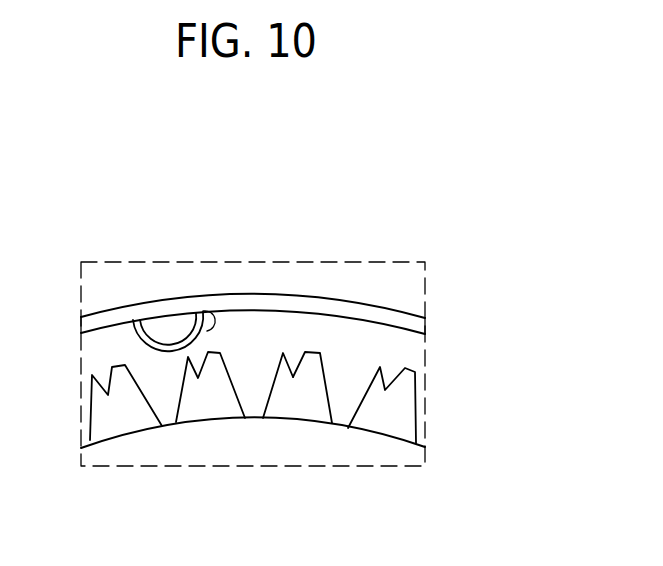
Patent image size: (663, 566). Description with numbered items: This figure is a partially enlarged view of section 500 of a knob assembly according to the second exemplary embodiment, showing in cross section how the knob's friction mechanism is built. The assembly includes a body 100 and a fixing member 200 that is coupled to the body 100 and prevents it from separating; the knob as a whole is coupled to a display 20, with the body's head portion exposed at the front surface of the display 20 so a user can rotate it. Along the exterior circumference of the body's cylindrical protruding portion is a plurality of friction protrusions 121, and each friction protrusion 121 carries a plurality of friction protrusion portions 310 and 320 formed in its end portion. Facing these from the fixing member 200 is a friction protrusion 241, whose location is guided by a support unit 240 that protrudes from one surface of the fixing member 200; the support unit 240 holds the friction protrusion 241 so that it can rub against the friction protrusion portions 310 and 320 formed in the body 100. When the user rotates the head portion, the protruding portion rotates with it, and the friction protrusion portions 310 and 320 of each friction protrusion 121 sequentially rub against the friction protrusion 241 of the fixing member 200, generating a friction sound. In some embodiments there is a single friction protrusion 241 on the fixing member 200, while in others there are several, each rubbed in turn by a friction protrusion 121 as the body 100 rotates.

The section 500 is at (367, 247).
The display 20 is at (395, 280).
The fixing member 200 is at (413, 353).
The support unit 240 is at (163, 311).
The friction protrusion 241 is at (217, 320).
The body 100 is at (307, 445).
The friction protrusion 121 is at (292, 393).
The friction protrusion portion 310 is at (282, 363).
The friction protrusion portion 320 is at (313, 363).